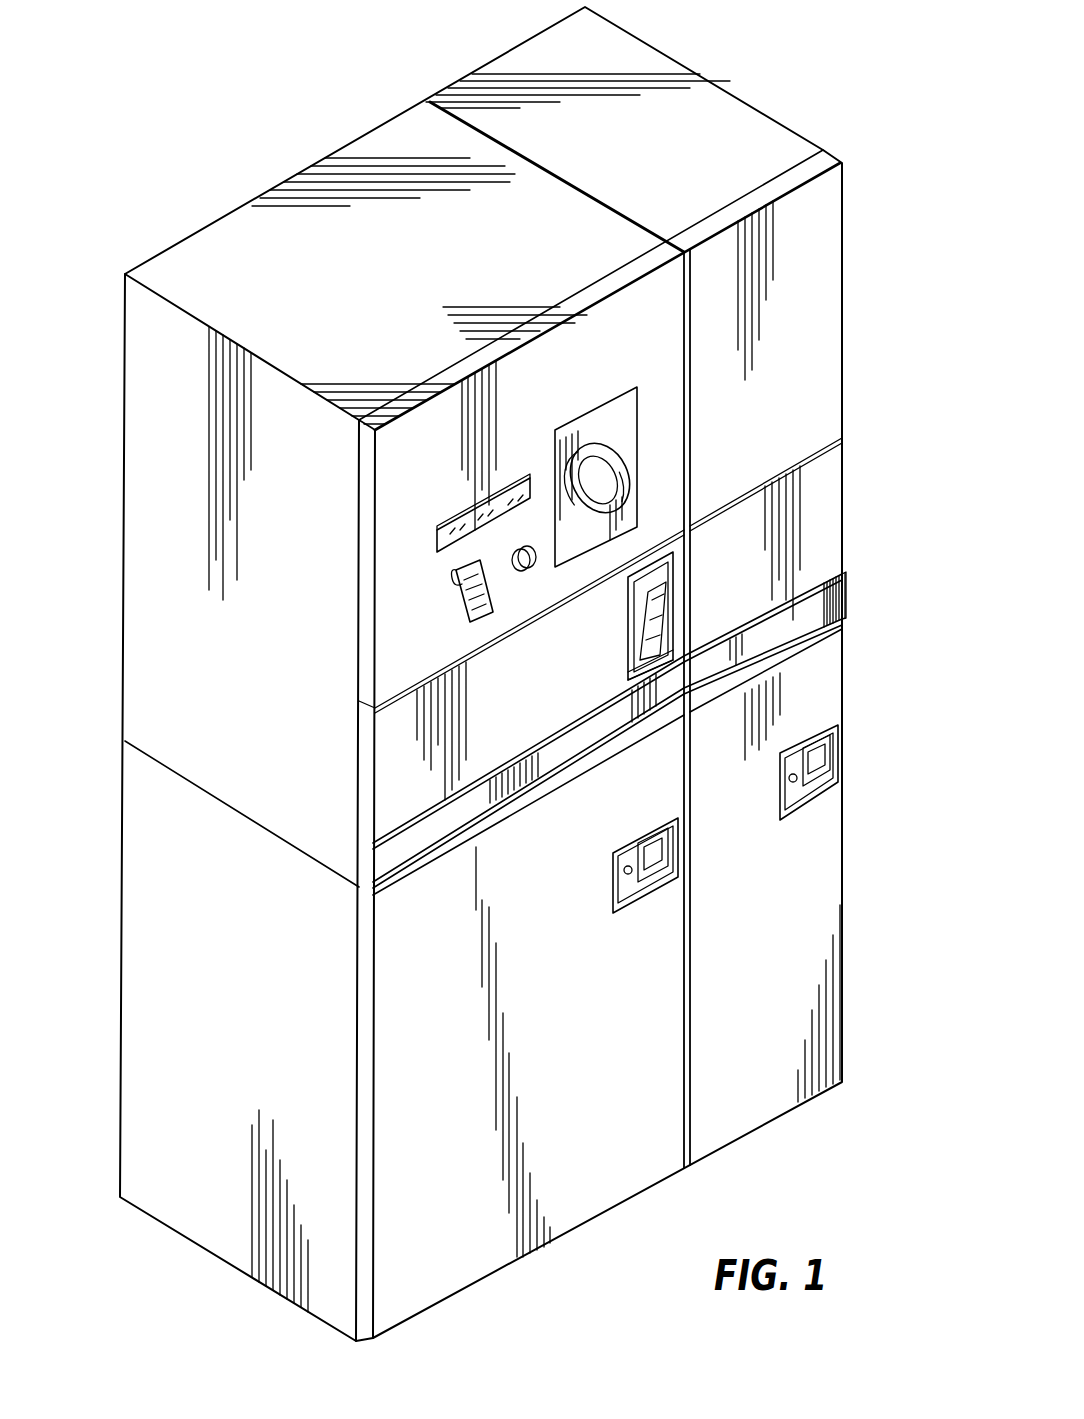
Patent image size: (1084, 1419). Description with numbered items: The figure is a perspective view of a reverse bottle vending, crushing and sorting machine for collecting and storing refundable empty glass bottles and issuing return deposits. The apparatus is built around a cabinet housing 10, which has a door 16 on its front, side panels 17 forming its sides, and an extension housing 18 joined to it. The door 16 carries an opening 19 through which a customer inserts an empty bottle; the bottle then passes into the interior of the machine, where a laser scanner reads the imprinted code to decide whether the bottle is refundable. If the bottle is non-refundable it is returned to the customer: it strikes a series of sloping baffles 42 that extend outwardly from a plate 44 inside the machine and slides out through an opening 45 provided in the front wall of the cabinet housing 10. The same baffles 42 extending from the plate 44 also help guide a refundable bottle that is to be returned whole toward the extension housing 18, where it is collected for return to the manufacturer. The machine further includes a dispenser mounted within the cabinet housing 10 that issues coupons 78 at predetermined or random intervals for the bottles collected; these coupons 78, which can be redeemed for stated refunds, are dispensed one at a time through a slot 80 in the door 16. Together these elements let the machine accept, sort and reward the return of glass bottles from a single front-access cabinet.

The cabinet housing 10 is at (852, 497).
The door 16 is at (620, 1153).
The side panels 17 is at (150, 830).
The extension housing 18 is at (818, 697).
The opening 19 is at (607, 455).
The sloping baffles 42 is at (660, 598).
The plate 44 is at (654, 634).
The opening 45 is at (627, 673).
The coupons 78 is at (462, 603).
The slot 80 is at (480, 568).